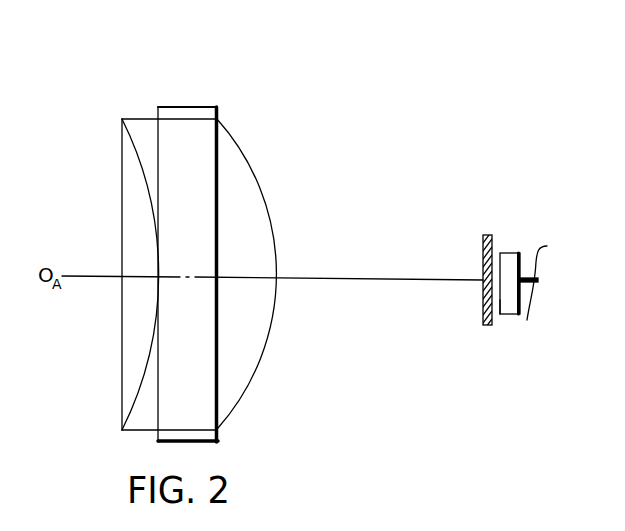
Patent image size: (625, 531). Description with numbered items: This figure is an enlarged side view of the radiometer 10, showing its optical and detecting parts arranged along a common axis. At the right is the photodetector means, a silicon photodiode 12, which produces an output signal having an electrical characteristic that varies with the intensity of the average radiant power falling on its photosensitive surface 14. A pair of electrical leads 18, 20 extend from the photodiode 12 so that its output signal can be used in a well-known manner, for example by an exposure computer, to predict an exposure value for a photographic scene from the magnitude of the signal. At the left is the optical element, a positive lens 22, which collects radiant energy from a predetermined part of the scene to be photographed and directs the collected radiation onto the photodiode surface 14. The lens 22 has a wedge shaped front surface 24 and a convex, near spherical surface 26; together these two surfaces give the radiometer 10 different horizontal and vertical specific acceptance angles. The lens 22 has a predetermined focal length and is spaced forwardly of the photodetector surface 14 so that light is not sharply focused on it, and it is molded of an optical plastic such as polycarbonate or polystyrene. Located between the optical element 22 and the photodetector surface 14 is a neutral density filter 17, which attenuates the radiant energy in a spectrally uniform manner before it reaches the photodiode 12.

The radiometer 10 is at (349, 83).
The silicon photodiode 12 is at (506, 253).
The photosensitive surface 14 is at (492, 306).
The neutral density filter 17 is at (483, 305).
The electrical lead 18 is at (550, 277).
The electrical lead 20 is at (527, 320).
The positive lens 22 is at (236, 274).
The wedge shaped front surface 24 is at (128, 218).
The convex near spherical surface 26 is at (270, 226).